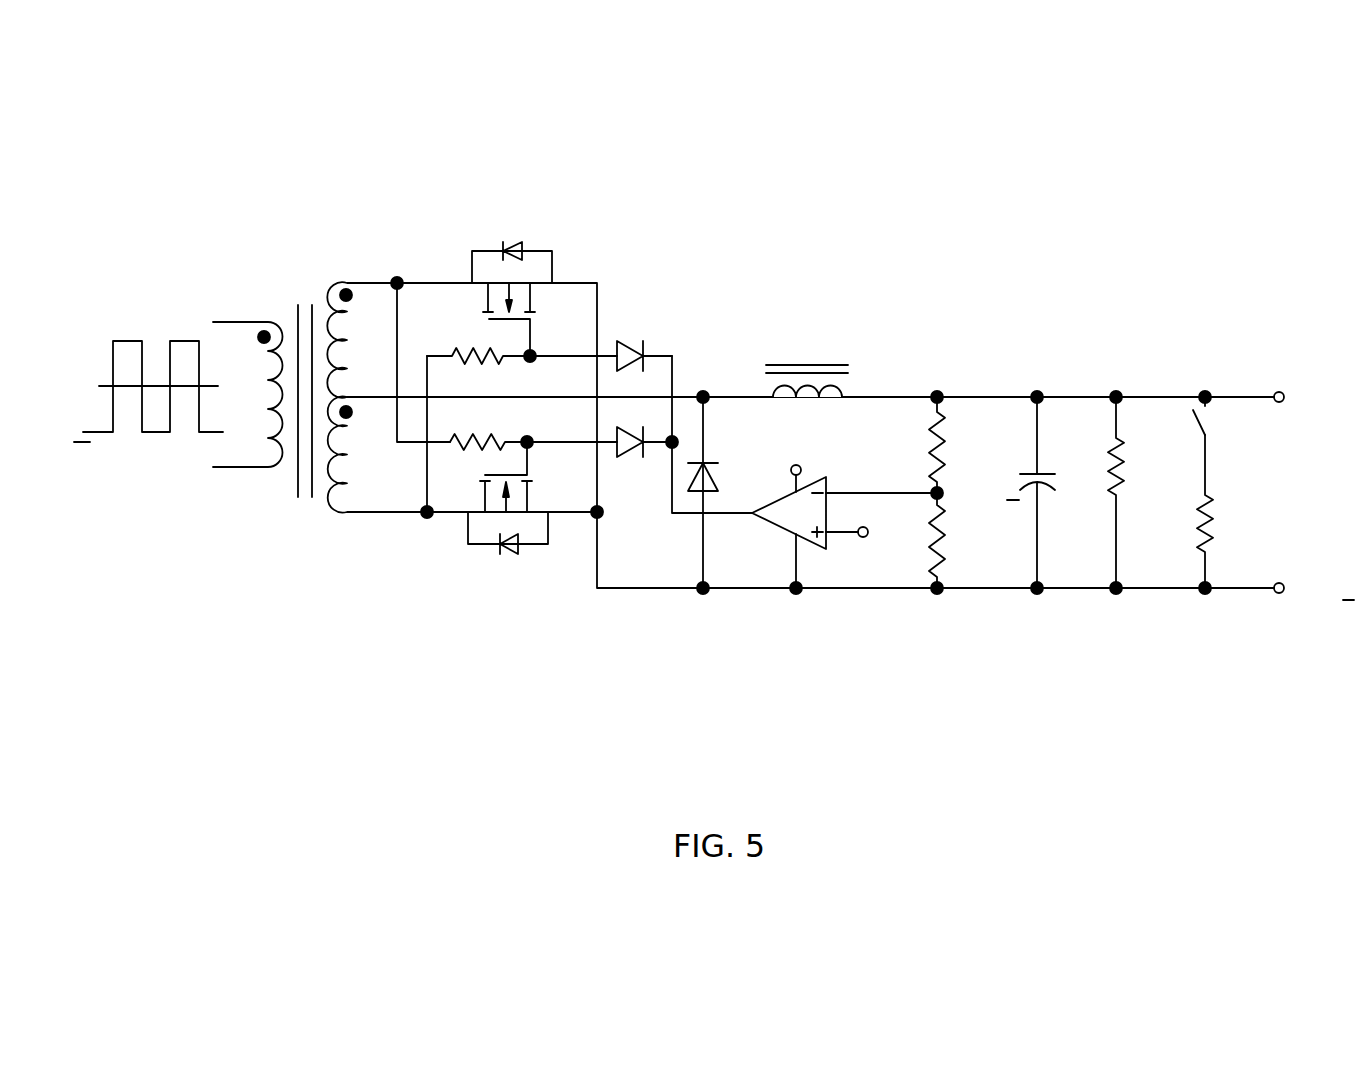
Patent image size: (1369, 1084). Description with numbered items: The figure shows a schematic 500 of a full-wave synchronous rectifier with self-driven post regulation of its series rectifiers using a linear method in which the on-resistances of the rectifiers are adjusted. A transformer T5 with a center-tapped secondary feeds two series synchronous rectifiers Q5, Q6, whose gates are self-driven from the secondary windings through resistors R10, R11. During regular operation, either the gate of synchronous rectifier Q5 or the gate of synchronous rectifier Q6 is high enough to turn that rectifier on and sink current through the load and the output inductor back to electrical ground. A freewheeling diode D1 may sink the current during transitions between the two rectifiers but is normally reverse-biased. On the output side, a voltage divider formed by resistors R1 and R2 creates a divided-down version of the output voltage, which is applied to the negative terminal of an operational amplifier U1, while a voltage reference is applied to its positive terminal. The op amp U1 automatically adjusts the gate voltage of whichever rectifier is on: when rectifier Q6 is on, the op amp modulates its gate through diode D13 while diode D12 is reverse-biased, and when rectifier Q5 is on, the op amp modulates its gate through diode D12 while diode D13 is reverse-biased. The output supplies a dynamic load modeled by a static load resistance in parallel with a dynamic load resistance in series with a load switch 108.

The schematic 500 is at (1042, 212).
The load switch 108 is at (1207, 442).
The transformer T5 is at (405, 390).
The synchronous rectifier Q5 is at (512, 280).
The synchronous rectifier Q6 is at (508, 513).
The resistor R10 is at (478, 338).
The resistor R11 is at (488, 424).
The diode D12 is at (642, 336).
The diode D13 is at (642, 460).
The freewheeling diode D1 is at (717, 492).
The operational amplifier U1 is at (844, 515).
The resistor R1 is at (957, 445).
The resistor R2 is at (957, 540).